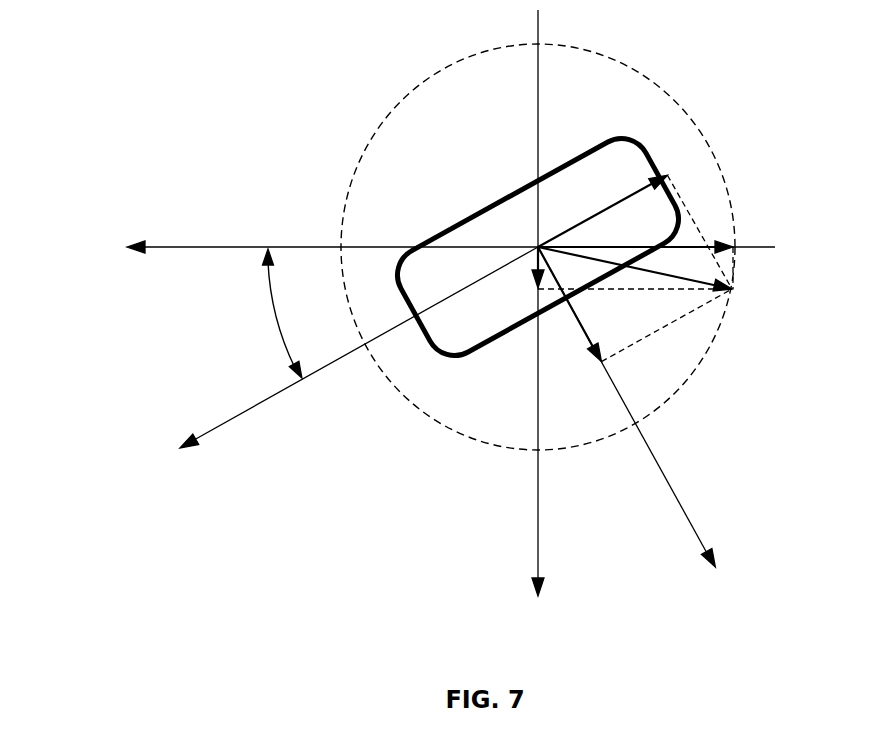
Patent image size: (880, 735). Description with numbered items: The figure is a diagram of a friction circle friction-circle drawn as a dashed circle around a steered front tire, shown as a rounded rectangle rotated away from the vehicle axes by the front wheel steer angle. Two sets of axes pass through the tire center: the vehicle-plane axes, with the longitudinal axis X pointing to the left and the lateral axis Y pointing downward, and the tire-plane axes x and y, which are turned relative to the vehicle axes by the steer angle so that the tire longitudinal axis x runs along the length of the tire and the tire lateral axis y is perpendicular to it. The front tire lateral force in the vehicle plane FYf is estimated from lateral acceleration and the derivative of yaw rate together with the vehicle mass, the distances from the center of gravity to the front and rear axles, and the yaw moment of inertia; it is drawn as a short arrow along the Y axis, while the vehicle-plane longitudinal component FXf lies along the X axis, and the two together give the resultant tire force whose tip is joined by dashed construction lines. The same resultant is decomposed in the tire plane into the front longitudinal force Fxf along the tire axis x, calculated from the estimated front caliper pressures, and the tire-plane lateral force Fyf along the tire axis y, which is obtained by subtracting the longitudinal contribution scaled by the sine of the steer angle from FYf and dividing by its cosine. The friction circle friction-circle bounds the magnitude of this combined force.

The friction circle friction-circle is at (767, 63).
The vehicle longitudinal axis X is at (451, 219).
The vehicle lateral axis Y is at (517, 303).
The tire longitudinal axis x is at (359, 362).
The tire lateral axis y is at (640, 407).
The front longitudinal force in tire plane Fxf is at (620, 196).
The front tire lateral force in tire plane Fyf is at (570, 318).
The front tire longitudinal force in vehicle plane FXf is at (639, 251).
The front tire lateral force in vehicle plane FYf is at (618, 273).